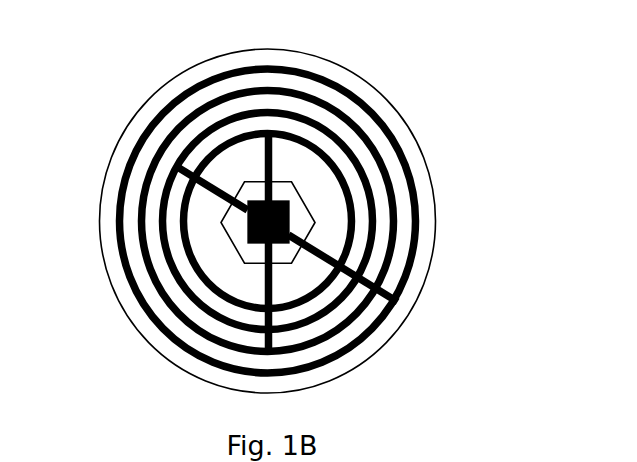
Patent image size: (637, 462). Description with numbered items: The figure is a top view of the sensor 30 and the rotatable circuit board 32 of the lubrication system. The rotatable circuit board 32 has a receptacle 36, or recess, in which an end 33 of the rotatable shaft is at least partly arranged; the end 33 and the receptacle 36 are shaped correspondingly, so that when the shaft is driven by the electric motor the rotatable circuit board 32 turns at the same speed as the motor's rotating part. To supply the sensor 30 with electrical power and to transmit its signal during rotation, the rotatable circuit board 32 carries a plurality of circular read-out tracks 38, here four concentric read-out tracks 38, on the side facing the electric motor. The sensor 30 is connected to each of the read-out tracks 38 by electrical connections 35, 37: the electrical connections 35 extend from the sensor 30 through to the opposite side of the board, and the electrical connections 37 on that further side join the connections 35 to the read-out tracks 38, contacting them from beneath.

The sensor 30 is at (290, 216).
The rotatable circuit board 32 is at (388, 90).
The end of the rotatable shaft 33 is at (240, 228).
The electrical connections 35 is at (258, 188).
The receptacle 36 is at (285, 170).
The electrical connections 37 is at (260, 150).
The read-out tracks 38 is at (410, 143).